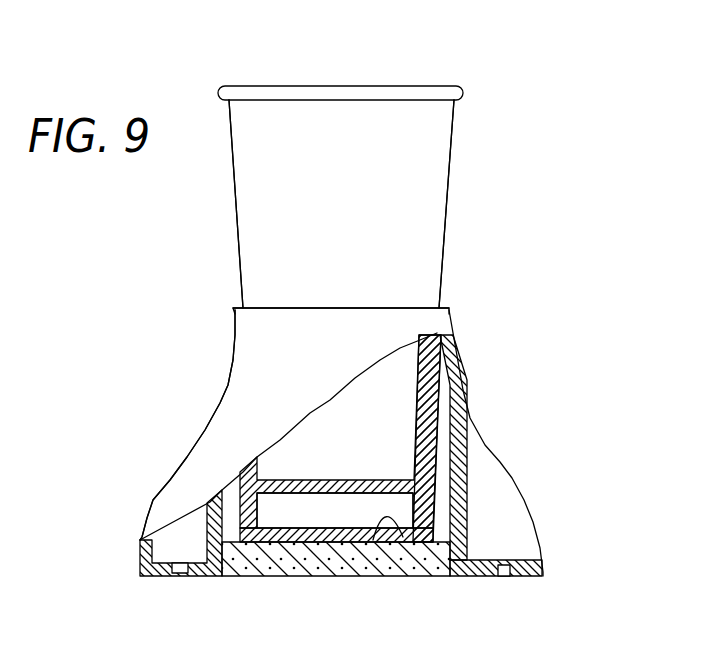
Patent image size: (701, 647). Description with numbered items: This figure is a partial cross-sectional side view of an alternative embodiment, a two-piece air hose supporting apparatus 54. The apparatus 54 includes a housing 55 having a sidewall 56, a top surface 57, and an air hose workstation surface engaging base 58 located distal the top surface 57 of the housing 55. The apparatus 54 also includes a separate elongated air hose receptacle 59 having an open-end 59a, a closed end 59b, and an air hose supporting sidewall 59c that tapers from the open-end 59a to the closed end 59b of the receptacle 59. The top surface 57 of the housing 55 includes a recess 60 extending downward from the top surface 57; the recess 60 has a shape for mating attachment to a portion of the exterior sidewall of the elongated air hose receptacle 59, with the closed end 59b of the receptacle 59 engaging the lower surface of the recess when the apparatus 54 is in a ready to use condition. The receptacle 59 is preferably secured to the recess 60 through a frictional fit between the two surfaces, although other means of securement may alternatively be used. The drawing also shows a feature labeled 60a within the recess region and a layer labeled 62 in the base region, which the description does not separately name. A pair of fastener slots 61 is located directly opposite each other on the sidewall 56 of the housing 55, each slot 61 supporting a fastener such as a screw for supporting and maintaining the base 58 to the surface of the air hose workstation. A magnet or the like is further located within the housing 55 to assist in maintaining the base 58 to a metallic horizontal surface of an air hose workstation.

The air hose supporting apparatus 54 is at (488, 70).
The housing 55 is at (157, 473).
The sidewall 56 is at (230, 415).
The top surface 57 is at (240, 308).
The air hose workstation surface engaging base 58 is at (530, 577).
The elongated air hose receptacle 59 is at (458, 200).
The open-end 59a is at (385, 86).
The closed end 59b is at (287, 543).
The air hose supporting sidewall 59c is at (470, 415).
The recess 60 is at (320, 515).
The opening 60a is at (403, 540).
The fastener slots 61 is at (180, 573).
The sealing layer 62 is at (347, 562).